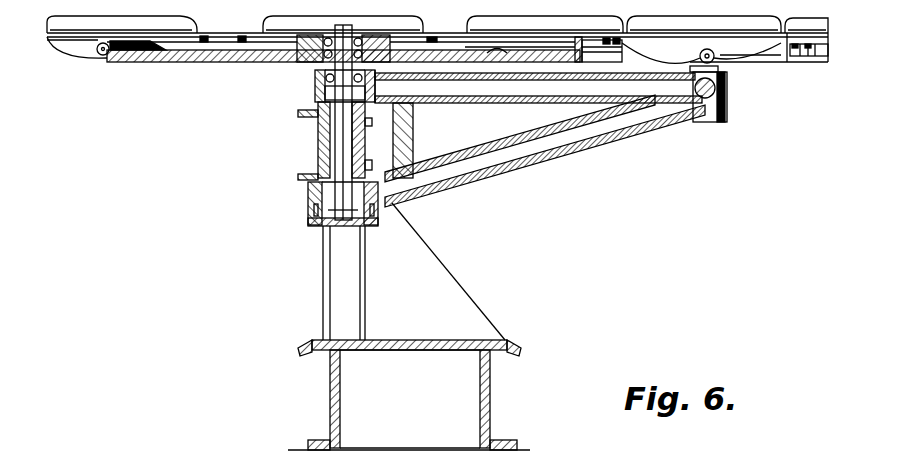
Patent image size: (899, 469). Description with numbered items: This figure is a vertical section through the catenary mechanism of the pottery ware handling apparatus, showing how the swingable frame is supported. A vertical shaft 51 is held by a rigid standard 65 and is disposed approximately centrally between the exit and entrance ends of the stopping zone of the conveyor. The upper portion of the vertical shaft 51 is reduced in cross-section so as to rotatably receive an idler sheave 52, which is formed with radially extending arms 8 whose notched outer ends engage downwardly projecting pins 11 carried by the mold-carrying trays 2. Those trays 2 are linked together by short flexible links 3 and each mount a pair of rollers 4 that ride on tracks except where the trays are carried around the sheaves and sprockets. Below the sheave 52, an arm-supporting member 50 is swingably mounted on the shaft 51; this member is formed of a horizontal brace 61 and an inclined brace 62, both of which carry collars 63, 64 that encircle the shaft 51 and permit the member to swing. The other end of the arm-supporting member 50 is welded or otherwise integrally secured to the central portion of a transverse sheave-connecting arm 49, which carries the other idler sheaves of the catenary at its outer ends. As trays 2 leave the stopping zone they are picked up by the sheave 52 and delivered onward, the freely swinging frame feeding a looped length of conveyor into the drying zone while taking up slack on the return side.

The mold-carrying tray 2 is at (87, 42).
The flexible link 3 is at (207, 43).
The roller 4 is at (103, 56).
The radially extending arm 8 is at (232, 61).
The downwardly projecting pin 11 is at (598, 50).
The sheave-connecting arm 49 is at (709, 120).
The arm-supporting member 50 is at (552, 114).
The vertical shaft 51 is at (338, 138).
The third idler sheave 52 is at (147, 58).
The horizontal brace 61 is at (444, 103).
The inclined brace 62 is at (543, 157).
The collar 63 is at (315, 78).
The collar 64 is at (308, 190).
The rigid standard 65 is at (432, 322).